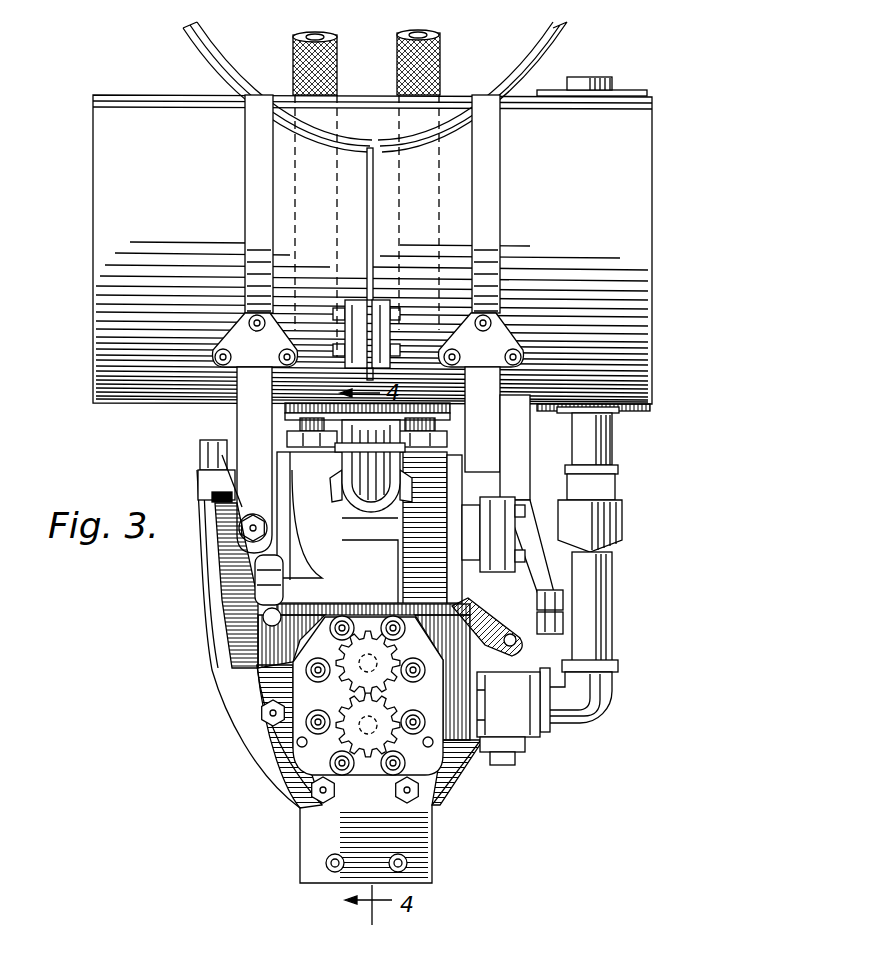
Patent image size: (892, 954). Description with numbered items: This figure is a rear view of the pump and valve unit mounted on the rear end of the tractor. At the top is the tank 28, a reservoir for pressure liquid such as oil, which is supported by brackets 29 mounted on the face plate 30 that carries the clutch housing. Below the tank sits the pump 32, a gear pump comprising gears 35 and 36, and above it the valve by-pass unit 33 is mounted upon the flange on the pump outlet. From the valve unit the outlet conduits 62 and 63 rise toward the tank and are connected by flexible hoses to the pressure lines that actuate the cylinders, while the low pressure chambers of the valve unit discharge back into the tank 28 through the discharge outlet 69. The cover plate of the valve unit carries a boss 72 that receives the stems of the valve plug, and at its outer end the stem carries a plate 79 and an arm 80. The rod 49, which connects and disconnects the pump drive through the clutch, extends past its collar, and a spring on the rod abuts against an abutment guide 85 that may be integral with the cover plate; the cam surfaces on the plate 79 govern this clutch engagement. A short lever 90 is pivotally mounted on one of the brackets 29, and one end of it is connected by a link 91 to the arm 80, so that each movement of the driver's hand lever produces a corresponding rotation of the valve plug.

The tank 28 is at (630, 200).
The brackets 29 is at (513, 424).
The face plate 30 is at (232, 714).
The pump 32 is at (330, 745).
The valve by-pass unit 33 is at (288, 593).
The gear 35 is at (310, 660).
The gear 36 is at (325, 700).
The rod 49 is at (500, 648).
The outlet conduit 62 is at (416, 35).
The outlet conduit 63 is at (298, 50).
The discharge outlet 69 is at (345, 505).
The boss 72 is at (472, 545).
The plate 79 is at (548, 585).
The arm 80 is at (547, 616).
The abutment guide 85 is at (480, 640).
The short lever 90 is at (523, 441).
The link 91 is at (503, 572).